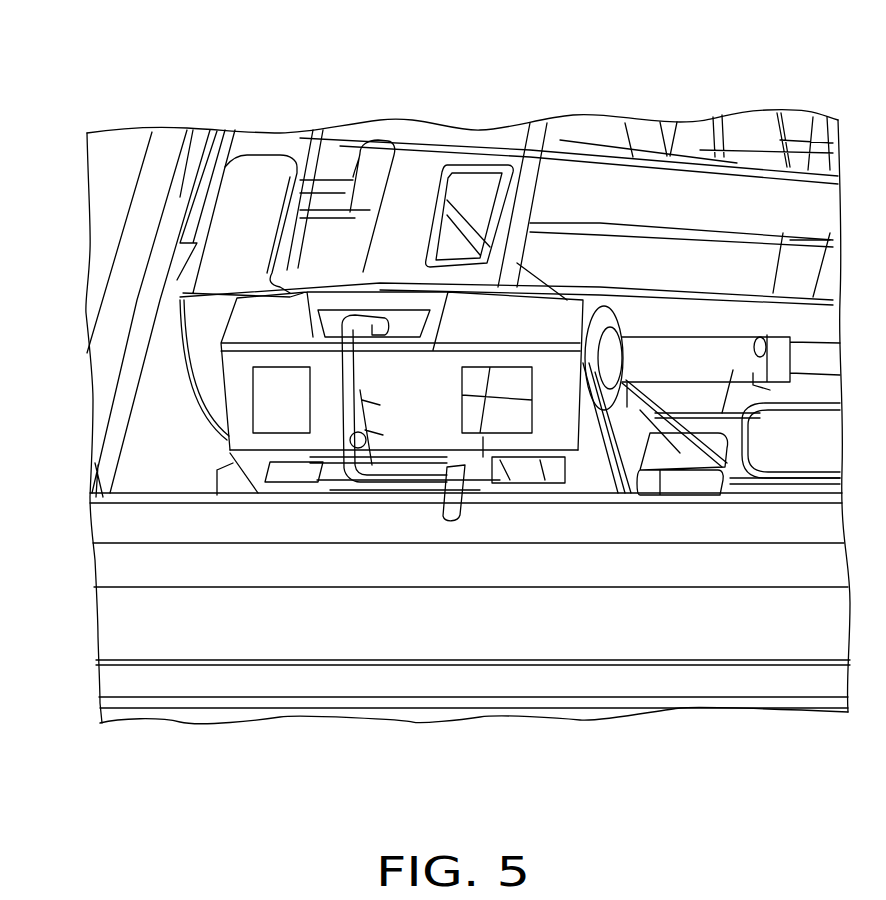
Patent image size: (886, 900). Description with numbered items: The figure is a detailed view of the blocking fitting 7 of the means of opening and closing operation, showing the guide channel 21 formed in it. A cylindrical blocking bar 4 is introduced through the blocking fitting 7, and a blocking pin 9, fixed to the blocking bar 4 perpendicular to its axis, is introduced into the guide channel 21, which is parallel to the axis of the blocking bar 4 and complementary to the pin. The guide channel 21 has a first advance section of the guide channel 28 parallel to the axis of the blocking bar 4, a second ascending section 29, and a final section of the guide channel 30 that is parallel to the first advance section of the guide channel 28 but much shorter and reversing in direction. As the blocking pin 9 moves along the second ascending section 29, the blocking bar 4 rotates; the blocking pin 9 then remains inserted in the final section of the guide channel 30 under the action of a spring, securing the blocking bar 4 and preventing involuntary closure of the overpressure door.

The blocking bar 4 is at (775, 348).
The blocking fitting 7 is at (257, 322).
The blocking pin 9 is at (455, 525).
The guide channel 21 is at (360, 393).
The first advance section of the guide channel 28 is at (403, 472).
The second ascending section of the guide channel 29 is at (353, 433).
The final section of the guide channel 30 is at (378, 330).